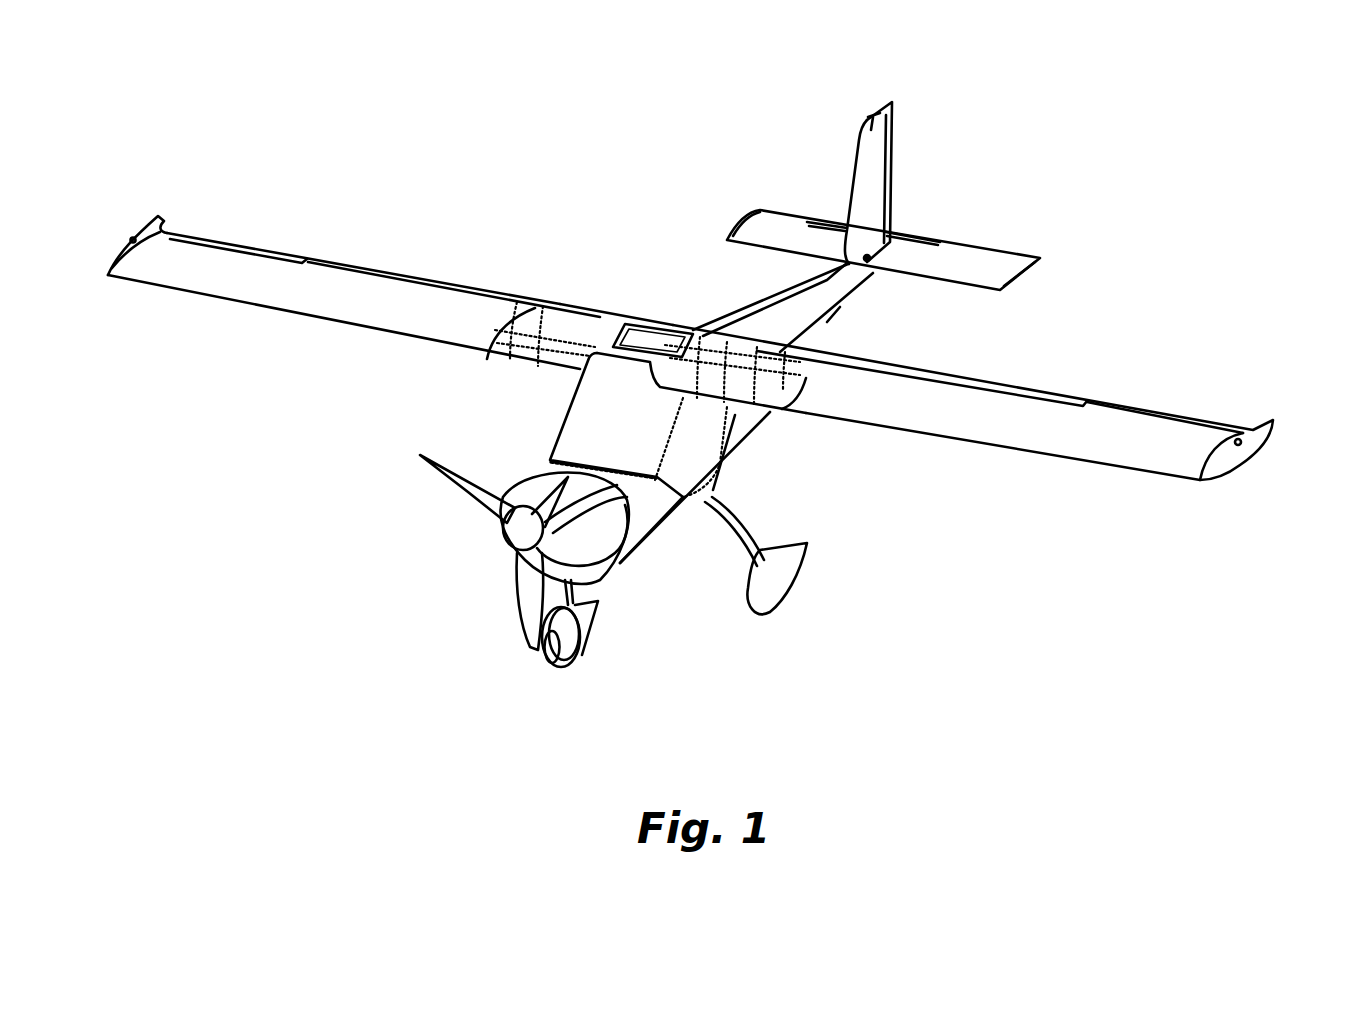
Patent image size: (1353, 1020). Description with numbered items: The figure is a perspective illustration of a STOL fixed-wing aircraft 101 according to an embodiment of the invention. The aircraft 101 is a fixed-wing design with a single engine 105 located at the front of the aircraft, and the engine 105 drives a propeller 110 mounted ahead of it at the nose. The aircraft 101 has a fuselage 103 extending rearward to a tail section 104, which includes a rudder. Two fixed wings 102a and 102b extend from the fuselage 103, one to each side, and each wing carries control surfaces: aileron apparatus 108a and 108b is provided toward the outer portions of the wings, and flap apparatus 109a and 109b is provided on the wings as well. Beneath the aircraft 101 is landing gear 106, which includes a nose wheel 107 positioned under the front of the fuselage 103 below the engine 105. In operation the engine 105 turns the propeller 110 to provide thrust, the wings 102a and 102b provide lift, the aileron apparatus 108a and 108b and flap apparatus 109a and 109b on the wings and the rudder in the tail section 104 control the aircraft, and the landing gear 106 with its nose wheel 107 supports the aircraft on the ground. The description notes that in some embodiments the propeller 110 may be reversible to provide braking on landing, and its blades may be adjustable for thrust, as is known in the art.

The STOL fixed-wing aircraft 101 is at (590, 184).
The fixed wing 102a is at (243, 282).
The fixed wing 102b is at (1050, 418).
The fuselage 103 is at (757, 305).
The tail section 104 is at (906, 224).
The engine 105 is at (528, 487).
The landing gear 106 is at (740, 516).
The nose wheel 107 is at (603, 617).
The aileron apparatus 108a is at (236, 242).
The aileron apparatus 108b is at (1186, 414).
The flap apparatus 109a is at (485, 288).
The flap apparatus 109b is at (970, 379).
The propeller 110 is at (508, 538).